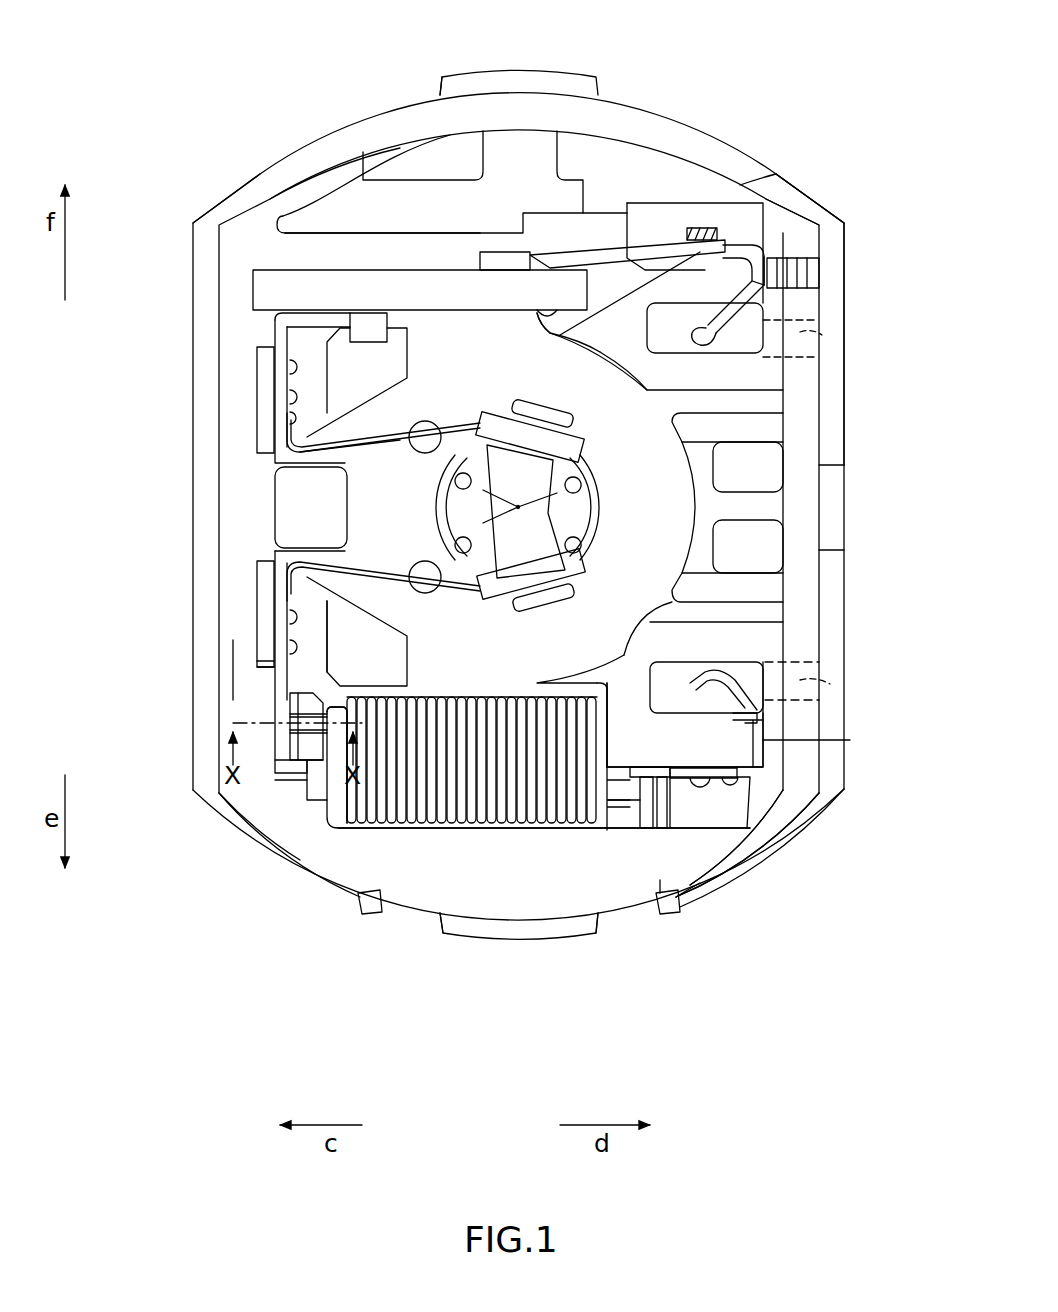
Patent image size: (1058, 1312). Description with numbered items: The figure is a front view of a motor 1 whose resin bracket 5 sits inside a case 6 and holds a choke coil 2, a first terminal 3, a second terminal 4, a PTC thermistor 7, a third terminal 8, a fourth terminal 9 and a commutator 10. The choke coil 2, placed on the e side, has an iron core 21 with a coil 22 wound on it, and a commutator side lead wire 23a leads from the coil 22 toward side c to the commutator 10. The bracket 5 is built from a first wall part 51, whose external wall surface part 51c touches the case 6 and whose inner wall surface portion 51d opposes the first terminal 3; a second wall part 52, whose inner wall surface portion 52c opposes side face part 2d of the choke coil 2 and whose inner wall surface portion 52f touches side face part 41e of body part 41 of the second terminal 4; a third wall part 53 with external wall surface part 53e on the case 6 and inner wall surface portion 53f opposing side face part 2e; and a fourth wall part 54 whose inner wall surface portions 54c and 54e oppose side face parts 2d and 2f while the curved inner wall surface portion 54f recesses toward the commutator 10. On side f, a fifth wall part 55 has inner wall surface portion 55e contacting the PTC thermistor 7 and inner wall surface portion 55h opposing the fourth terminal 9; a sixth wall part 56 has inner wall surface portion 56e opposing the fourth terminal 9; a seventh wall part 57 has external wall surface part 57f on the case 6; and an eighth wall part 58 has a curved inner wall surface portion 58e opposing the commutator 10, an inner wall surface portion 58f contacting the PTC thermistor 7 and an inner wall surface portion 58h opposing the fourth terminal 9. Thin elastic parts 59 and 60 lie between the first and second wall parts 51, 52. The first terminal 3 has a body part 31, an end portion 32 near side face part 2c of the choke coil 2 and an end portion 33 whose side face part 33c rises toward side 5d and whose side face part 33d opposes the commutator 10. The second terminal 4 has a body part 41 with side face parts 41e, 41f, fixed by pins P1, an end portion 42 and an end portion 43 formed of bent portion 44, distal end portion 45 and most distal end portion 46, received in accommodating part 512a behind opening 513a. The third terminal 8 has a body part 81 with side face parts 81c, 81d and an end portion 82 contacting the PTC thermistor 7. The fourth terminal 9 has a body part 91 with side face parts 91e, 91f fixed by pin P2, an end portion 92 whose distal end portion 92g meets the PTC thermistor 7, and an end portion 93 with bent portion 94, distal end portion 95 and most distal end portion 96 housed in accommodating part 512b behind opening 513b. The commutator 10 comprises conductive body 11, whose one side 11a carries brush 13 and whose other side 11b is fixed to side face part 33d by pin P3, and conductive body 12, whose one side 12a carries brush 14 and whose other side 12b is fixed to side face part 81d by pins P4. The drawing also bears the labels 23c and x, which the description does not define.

The motor 1 is at (772, 78).
The choke coil 2 is at (553, 852).
The side face part of choke coil 2c is at (330, 800).
The side face part of choke coil 2d is at (632, 800).
The side face part of choke coil 2e is at (400, 830).
The side face part of choke coil 2f is at (462, 698).
The first terminal 3 is at (268, 560).
The second terminal 4 is at (820, 790).
The bracket 5 is at (312, 140).
The side of bracket 5d is at (258, 440).
The case 6 is at (832, 205).
The PTC thermistor 7 is at (253, 290).
The third terminal 8 is at (262, 440).
The fourth terminal 9 is at (790, 240).
The commutator 10 is at (613, 527).
The conductive body 11 is at (400, 565).
The one side of conductive body 11a is at (455, 584).
The other side of conductive body 11b is at (325, 655).
The conductive body 12 is at (388, 455).
The one side of conductive body 12a is at (455, 430).
The other side of conductive body 12b is at (313, 433).
The brush 13 is at (572, 575).
The brush 14 is at (575, 437).
The iron core 21 is at (618, 810).
The coil 22 is at (358, 900).
The commutator side lead wire 23a is at (280, 770).
The terminal block 23c is at (290, 725).
The body part of first terminal 31 is at (258, 660).
The end portion of first terminal 32 is at (310, 780).
The end portion of first terminal 33 is at (275, 553).
The side face part 33c is at (292, 615).
The side face part 33d is at (292, 645).
The body part of second terminal 41 is at (790, 820).
The side face part 41e is at (760, 848).
The side face part 41f is at (770, 835).
The end portion of second terminal 42 is at (663, 830).
The end portion of second terminal 43 is at (750, 680).
The bent portion 44 is at (772, 763).
The distal end portion 45 is at (733, 700).
The most distal end portion 46 is at (690, 672).
The first wall part 51 is at (110, 655).
The external wall surface part 51c is at (275, 675).
The inner wall surface portion 51d is at (275, 685).
The second wall part 52 is at (832, 968).
The inner wall surface portion 52c is at (700, 880).
The inner wall surface portion 52f is at (750, 870).
The third wall part 53 is at (545, 998).
The external wall surface part 53e is at (468, 920).
The inner wall surface portion 53f is at (512, 918).
The fourth wall part 54 is at (922, 560).
The inner wall surface portion 54c is at (660, 647).
The inner wall surface portion 54e is at (690, 617).
The inner wall surface portion 54f is at (677, 587).
The fifth wall part 55 is at (150, 140).
The inner wall surface portion 55e is at (330, 233).
The inner wall surface portion 55h is at (372, 192).
The sixth wall part 56 is at (764, 230).
The inner wall surface portion 56e is at (782, 240).
The seventh wall part 57 is at (545, 118).
The external wall surface part 57f is at (490, 96).
The eighth wall part 58 is at (590, 368).
The inner wall surface portion 58e is at (580, 340).
The inner wall surface portion 58f is at (537, 316).
The inner wall surface portion 58h is at (620, 360).
The elastic part 59 is at (305, 790).
The elastic part 60 is at (647, 830).
The body part of third terminal 81 is at (258, 378).
The side face part 81c is at (292, 370).
The side face part 81d is at (292, 400).
The end portion of third terminal 82 is at (287, 320).
The body part of fourth terminal 91 is at (700, 252).
The side face part 91e is at (820, 272).
The side face part 91f is at (783, 237).
The end portion of fourth terminal 92 is at (600, 260).
The distal end portion 92g is at (522, 255).
The end portion of fourth terminal 93 is at (790, 300).
The bent portion 94 is at (690, 315).
The distal end portion 95 is at (735, 320).
The most distal end portion 96 is at (690, 348).
The accommodating part 512a is at (822, 700).
The accommodating part 512b is at (790, 322).
The opening 513a is at (830, 684).
The opening 513b is at (830, 340).
The pin P1 is at (850, 740).
The pin P2 is at (705, 232).
The pin P3 is at (325, 612).
The pin P4 is at (357, 382).
The rotation axis x is at (522, 507).